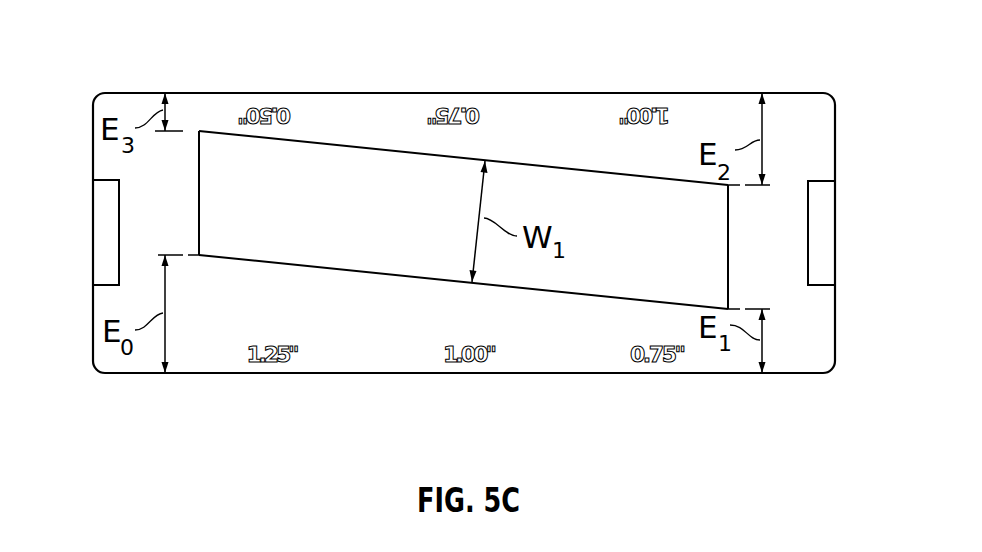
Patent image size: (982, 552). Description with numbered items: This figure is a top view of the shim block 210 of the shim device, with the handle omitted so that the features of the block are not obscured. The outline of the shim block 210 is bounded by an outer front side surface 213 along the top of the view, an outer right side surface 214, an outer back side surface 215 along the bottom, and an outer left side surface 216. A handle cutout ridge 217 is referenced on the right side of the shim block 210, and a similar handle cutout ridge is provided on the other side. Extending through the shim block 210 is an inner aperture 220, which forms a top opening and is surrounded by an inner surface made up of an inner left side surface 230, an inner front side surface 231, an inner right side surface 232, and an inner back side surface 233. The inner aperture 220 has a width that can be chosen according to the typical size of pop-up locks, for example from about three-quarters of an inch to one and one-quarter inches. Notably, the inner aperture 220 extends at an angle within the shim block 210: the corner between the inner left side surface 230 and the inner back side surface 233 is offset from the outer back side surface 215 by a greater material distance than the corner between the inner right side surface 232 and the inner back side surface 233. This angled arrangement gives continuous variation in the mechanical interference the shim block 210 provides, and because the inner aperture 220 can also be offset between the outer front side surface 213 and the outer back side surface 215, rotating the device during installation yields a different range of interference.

The shim block 210 is at (553, 108).
The outer front side surface 213 is at (278, 93).
The outer right side surface 214 is at (835, 125).
The outer back side surface 215 is at (240, 375).
The outer left side surface 216 is at (93, 143).
The handle cutout ridge 217 is at (826, 232).
The inner aperture 220 is at (427, 220).
The inner left side surface 230 is at (200, 150).
The inner front side surface 231 is at (352, 147).
The inner right side surface 232 is at (728, 205).
The inner back side surface 233 is at (393, 274).